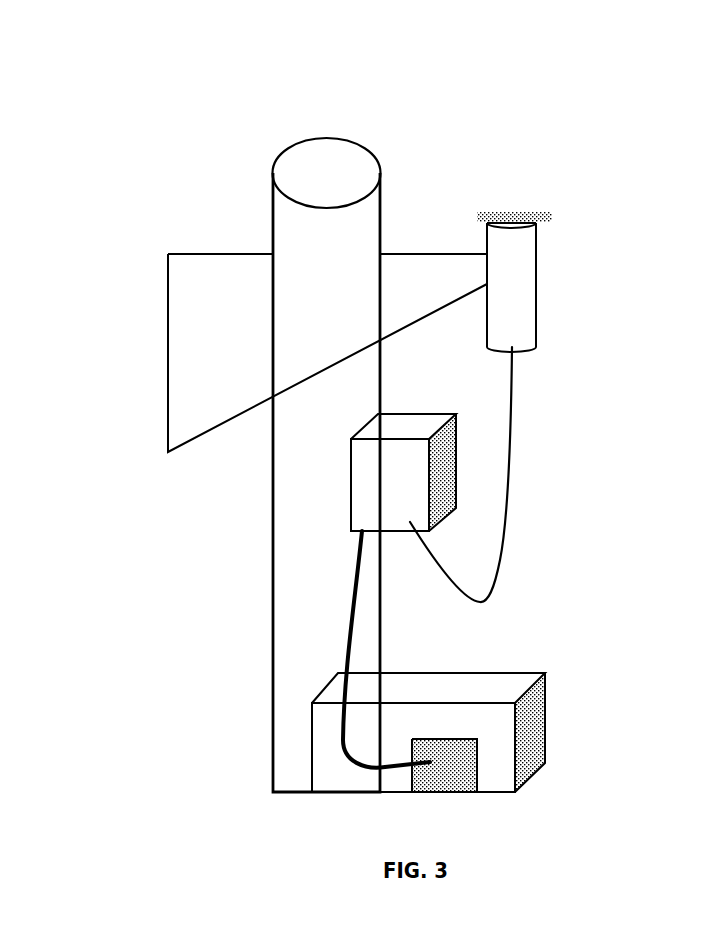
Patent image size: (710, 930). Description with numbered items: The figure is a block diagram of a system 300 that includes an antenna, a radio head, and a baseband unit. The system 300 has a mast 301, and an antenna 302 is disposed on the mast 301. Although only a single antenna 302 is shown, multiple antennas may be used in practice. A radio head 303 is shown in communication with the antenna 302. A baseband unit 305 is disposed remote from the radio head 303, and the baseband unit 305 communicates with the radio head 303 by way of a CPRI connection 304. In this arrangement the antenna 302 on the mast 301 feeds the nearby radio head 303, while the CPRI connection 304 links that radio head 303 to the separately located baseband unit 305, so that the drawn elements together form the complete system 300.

The system 300 is at (150, 94).
The mast 301 is at (307, 128).
The antenna 302 is at (485, 212).
The radio head 303 is at (458, 458).
The CPRI connection 304 is at (347, 635).
The baseband unit 305 is at (545, 718).